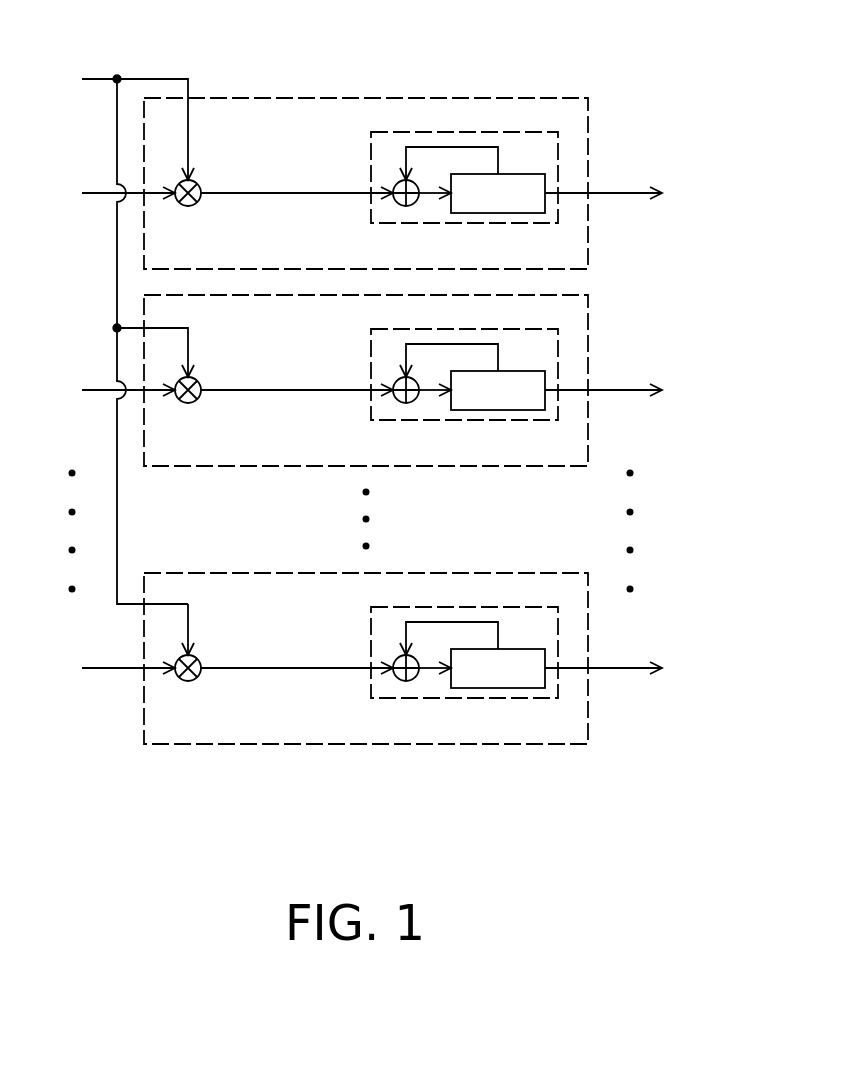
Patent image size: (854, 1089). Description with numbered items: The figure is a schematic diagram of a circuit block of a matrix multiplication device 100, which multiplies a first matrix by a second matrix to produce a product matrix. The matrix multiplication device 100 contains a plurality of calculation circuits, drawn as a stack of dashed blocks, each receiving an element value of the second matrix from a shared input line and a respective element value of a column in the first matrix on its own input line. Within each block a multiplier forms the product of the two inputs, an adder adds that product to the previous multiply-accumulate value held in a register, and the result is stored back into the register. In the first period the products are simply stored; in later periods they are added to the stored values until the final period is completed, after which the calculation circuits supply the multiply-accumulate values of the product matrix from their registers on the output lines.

The matrix multiplication device 100 is at (387, 459).